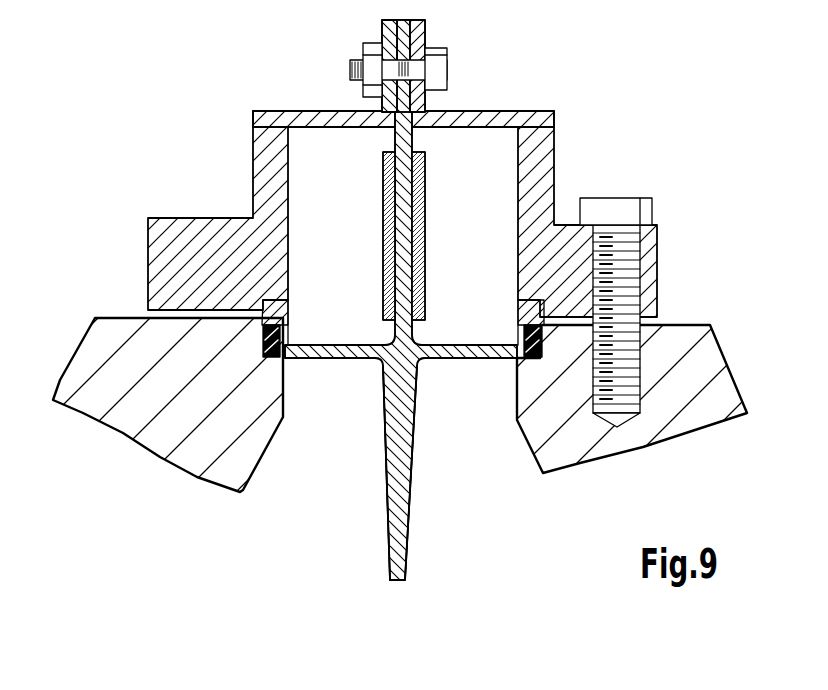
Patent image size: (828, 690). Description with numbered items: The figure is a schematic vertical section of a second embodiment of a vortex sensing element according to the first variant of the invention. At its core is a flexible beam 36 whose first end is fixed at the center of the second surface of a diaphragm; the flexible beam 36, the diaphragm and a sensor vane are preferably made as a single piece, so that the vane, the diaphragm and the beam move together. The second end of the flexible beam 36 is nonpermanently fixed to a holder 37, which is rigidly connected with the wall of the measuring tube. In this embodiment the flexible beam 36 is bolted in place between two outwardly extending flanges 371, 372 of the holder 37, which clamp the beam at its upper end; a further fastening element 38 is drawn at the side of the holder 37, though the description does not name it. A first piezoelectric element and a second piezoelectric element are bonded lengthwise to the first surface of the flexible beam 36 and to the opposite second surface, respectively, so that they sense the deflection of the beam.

The flexible beam 36 is at (470, 115).
The holder 37 is at (555, 128).
The fastening screw 38 is at (642, 208).
The outwardly extending flange 371 is at (380, 28).
The outwardly extending flange 372 is at (422, 28).